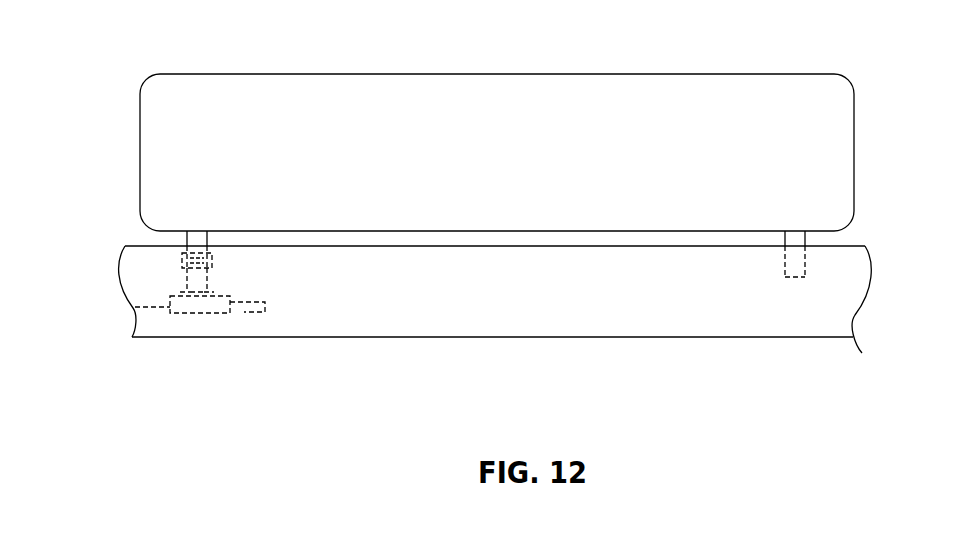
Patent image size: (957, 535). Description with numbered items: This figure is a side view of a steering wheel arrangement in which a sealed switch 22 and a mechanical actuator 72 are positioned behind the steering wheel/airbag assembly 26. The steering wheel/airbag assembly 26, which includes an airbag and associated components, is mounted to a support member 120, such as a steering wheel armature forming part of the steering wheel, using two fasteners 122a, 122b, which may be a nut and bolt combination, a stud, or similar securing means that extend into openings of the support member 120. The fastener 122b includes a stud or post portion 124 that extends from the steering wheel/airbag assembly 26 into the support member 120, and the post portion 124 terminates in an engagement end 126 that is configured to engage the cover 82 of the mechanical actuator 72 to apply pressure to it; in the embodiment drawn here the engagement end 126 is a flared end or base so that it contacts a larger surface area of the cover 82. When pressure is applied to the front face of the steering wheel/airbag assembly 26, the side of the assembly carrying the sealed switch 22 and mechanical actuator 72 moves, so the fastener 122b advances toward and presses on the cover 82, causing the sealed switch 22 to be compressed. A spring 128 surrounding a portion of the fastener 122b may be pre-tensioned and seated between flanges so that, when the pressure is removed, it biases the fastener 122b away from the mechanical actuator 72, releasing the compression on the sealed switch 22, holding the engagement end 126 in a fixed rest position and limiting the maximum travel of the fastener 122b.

The steering wheel/airbag assembly 26 is at (841, 58).
The cover 82 is at (702, 337).
The fastener 122a is at (807, 260).
The fastener 122b is at (180, 257).
The support member 120 is at (209, 255).
The spring 128 is at (212, 258).
The post portion 124 is at (210, 277).
The engagement end 126 is at (228, 286).
The mechanical actuator 72 is at (190, 313).
The sealed switch 22 is at (158, 312).